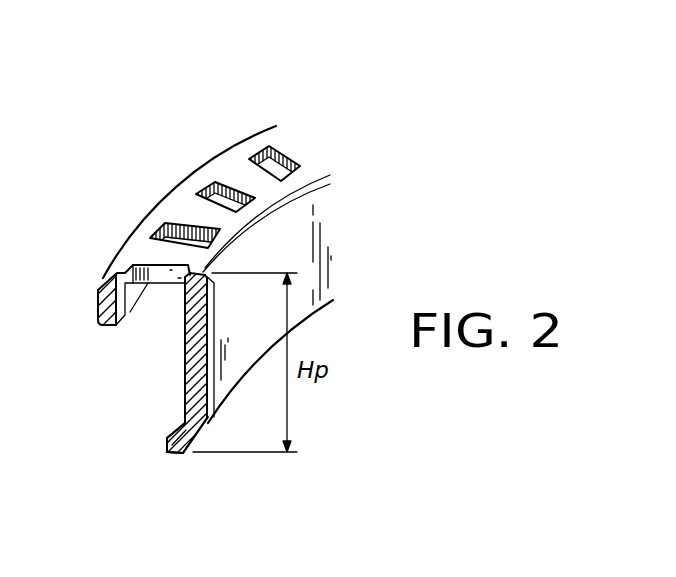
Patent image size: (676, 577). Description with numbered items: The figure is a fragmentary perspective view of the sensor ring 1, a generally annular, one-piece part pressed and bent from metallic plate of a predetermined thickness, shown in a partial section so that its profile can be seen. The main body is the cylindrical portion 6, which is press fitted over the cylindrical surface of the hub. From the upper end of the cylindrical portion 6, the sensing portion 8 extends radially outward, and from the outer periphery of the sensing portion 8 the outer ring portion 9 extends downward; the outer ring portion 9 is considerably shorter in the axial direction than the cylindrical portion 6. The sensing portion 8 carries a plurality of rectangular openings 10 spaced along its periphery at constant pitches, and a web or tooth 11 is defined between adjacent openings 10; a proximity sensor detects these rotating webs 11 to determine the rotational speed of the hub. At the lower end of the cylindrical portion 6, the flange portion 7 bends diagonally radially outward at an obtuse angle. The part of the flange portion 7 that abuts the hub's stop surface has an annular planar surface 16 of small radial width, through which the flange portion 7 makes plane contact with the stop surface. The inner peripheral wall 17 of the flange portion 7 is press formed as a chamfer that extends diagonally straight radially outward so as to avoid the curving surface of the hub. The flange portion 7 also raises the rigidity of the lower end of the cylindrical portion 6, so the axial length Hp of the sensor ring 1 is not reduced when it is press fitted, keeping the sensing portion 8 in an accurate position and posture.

The sensor ring 1 is at (168, 125).
The cylindrical portion 6 is at (190, 353).
The flange portion 7 is at (180, 427).
The sensing portion 8 is at (180, 258).
The outer ring portion 9 is at (98, 312).
The rectangular openings 10 is at (223, 178).
The web or tooth 11 is at (255, 178).
The annular planar surface 16 is at (177, 458).
The inner peripheral wall 17 is at (205, 452).